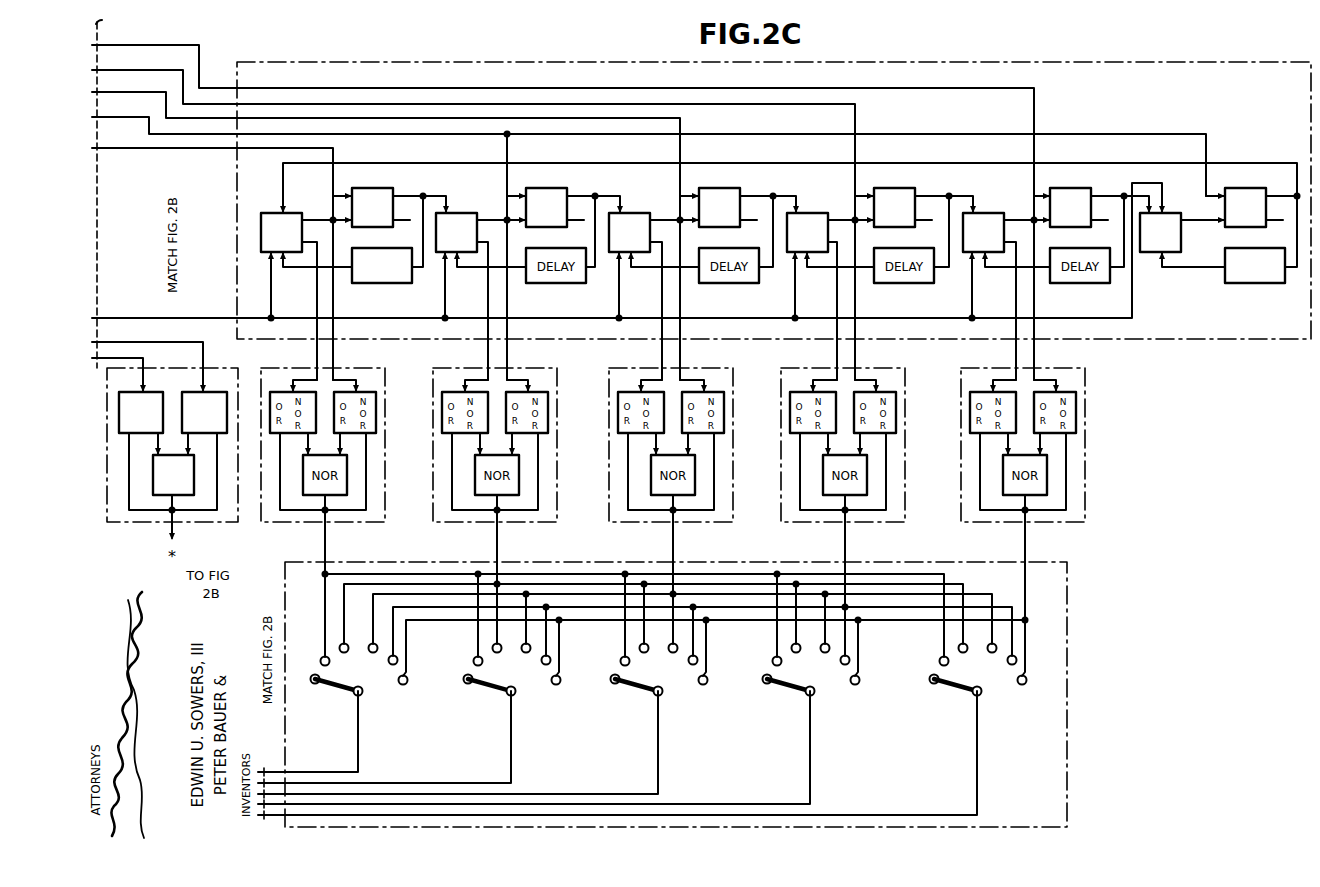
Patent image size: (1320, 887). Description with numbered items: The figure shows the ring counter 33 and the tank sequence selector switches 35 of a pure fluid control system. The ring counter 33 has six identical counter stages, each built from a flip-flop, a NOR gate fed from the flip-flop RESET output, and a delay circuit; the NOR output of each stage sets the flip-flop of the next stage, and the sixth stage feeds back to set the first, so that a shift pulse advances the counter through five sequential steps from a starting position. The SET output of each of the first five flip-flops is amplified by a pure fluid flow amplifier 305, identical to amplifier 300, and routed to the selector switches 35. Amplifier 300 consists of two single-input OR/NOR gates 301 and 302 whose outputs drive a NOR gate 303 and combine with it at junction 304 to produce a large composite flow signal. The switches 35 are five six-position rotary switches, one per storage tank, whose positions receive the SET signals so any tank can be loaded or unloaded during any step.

The ring counter 33 is at (1048, 63).
The tank sequence selector switches 35 is at (1068, 755).
The fluid flow amplifier 300 is at (227, 356).
The single input OR/NOR gate 301 is at (202, 390).
The single input OR/NOR gate 302 is at (146, 386).
The NOR gate 303 is at (194, 472).
The junction 304 is at (176, 514).
The pure fluid flow amplifier 305 is at (390, 395).